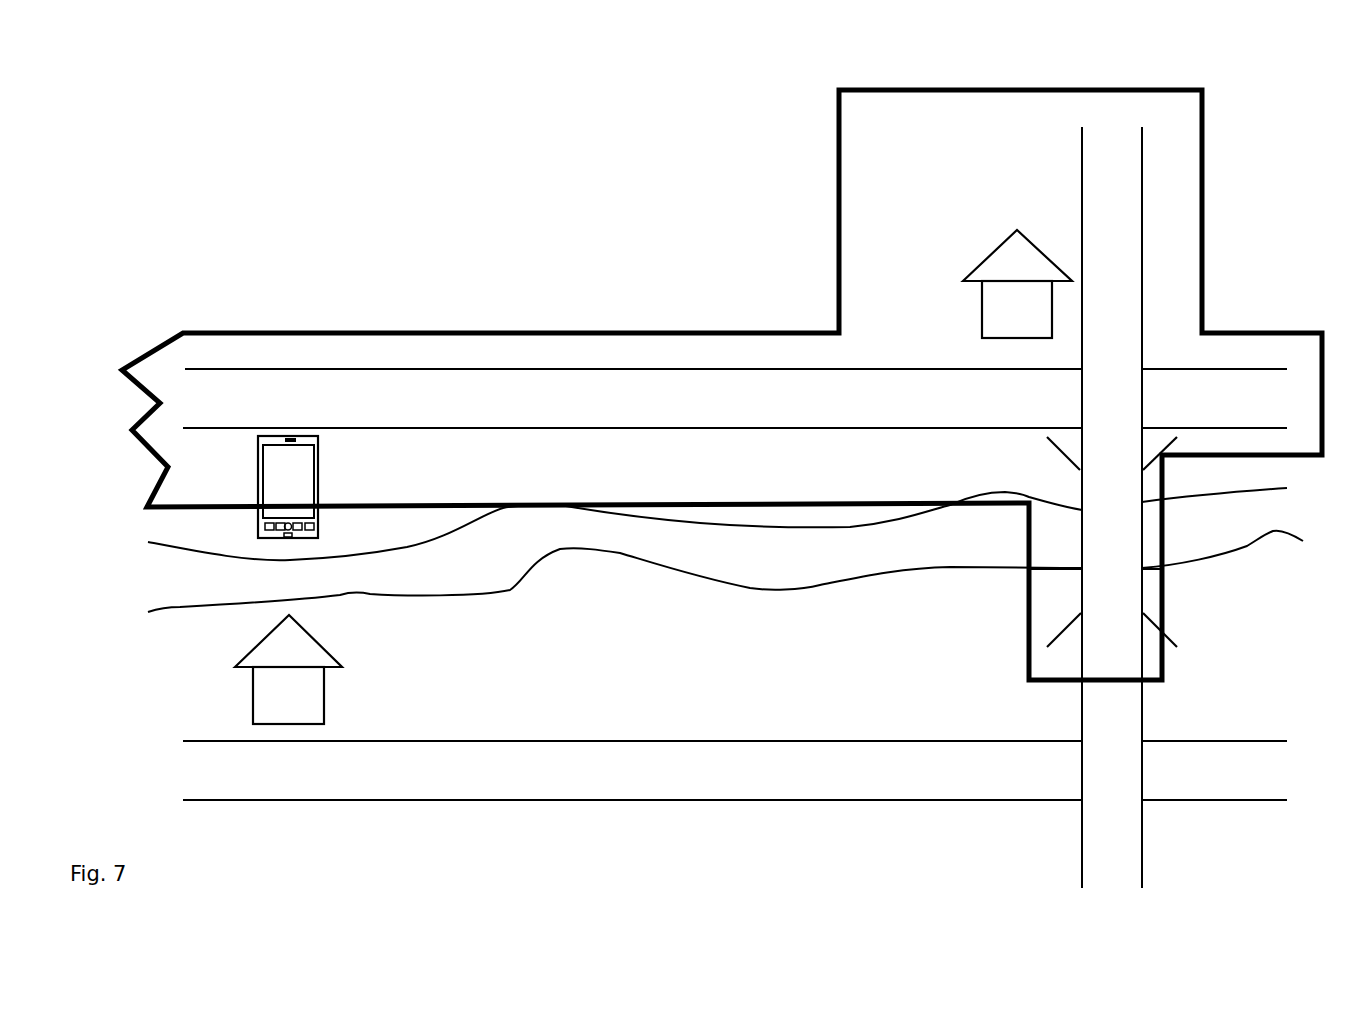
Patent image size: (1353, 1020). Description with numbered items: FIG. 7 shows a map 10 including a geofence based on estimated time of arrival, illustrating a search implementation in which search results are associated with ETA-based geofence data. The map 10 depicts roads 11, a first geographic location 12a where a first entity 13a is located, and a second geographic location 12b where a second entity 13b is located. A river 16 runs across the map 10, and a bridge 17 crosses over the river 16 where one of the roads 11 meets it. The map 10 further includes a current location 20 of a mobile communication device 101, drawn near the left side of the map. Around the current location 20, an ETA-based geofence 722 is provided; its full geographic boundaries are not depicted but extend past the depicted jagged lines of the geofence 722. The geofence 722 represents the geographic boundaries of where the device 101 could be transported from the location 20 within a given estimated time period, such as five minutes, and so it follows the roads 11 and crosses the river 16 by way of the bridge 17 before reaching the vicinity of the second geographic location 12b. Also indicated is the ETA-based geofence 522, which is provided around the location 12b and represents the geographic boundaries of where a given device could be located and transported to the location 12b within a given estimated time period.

The map 10 is at (700, 462).
The ETA-based geofence 722 is at (836, 238).
The ETA-based geofence 522 is at (1047, 170).
The first geographic location 12a is at (251, 669).
The first entity 13a is at (288, 695).
The second geographic location 12b is at (981, 284).
The second entity 13b is at (1017, 309).
The current location 20 is at (249, 487).
The mobile communication device 101 is at (288, 481).
The river 16 is at (725, 550).
The bridge 17 is at (1158, 619).
The roads 11 is at (735, 770).